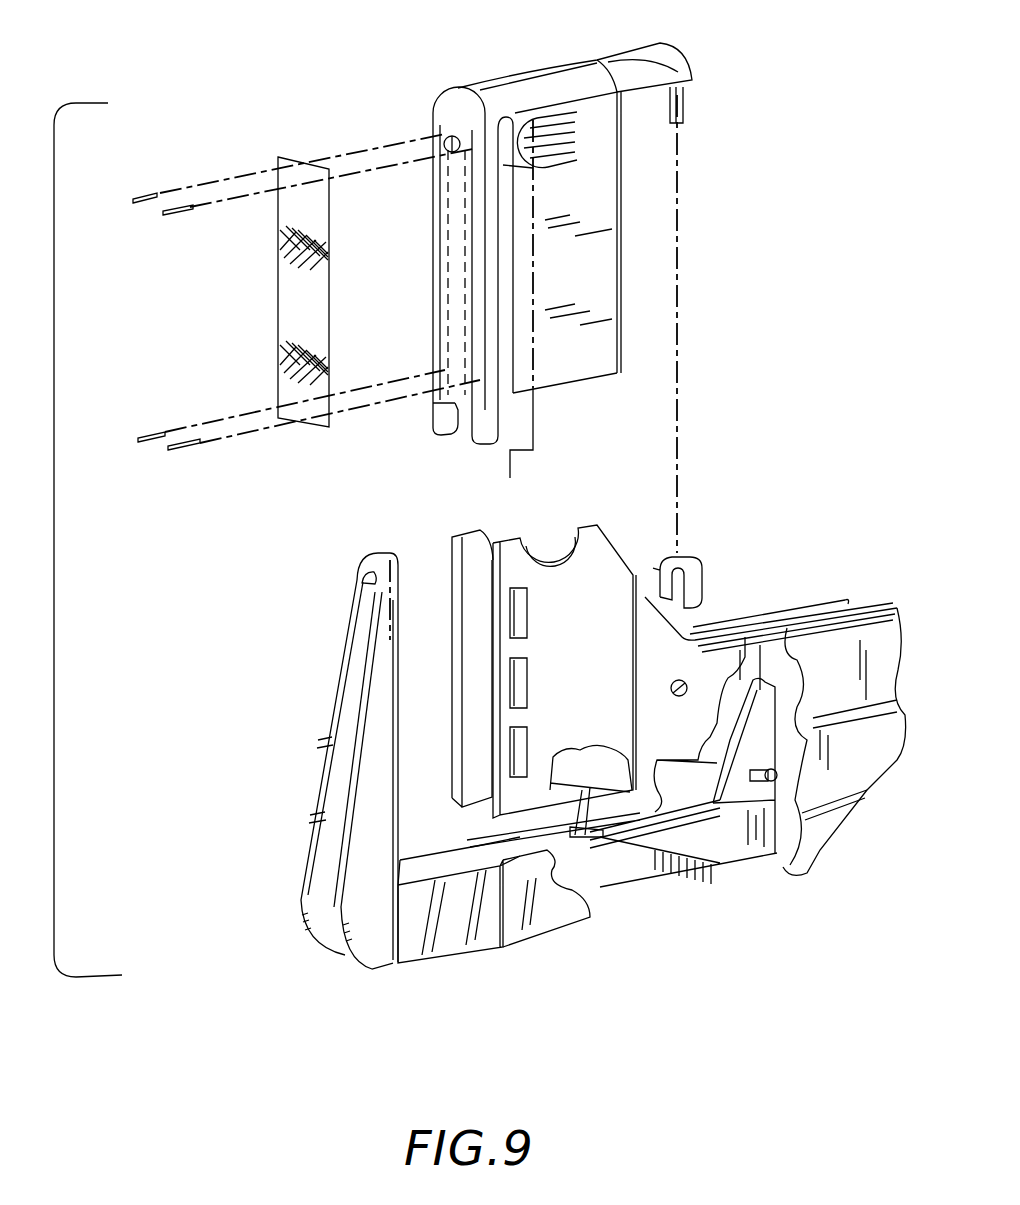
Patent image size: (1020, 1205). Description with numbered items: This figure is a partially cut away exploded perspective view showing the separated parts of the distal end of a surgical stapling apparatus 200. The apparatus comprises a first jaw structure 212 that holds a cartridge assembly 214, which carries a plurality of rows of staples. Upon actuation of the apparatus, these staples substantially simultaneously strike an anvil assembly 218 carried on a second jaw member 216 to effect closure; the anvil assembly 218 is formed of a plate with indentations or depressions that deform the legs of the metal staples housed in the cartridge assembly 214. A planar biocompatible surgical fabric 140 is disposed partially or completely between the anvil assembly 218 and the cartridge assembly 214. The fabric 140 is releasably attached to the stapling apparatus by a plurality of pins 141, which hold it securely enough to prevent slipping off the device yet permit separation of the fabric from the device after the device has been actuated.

The surgical fabric 140 is at (278, 300).
The pins 141 is at (145, 196).
The surgical stapling apparatus 200 is at (712, 340).
The first jaw structure 212 is at (580, 613).
The cartridge assembly 214 is at (533, 72).
The second jaw member 216 is at (344, 655).
The anvil assembly 218 is at (387, 662).